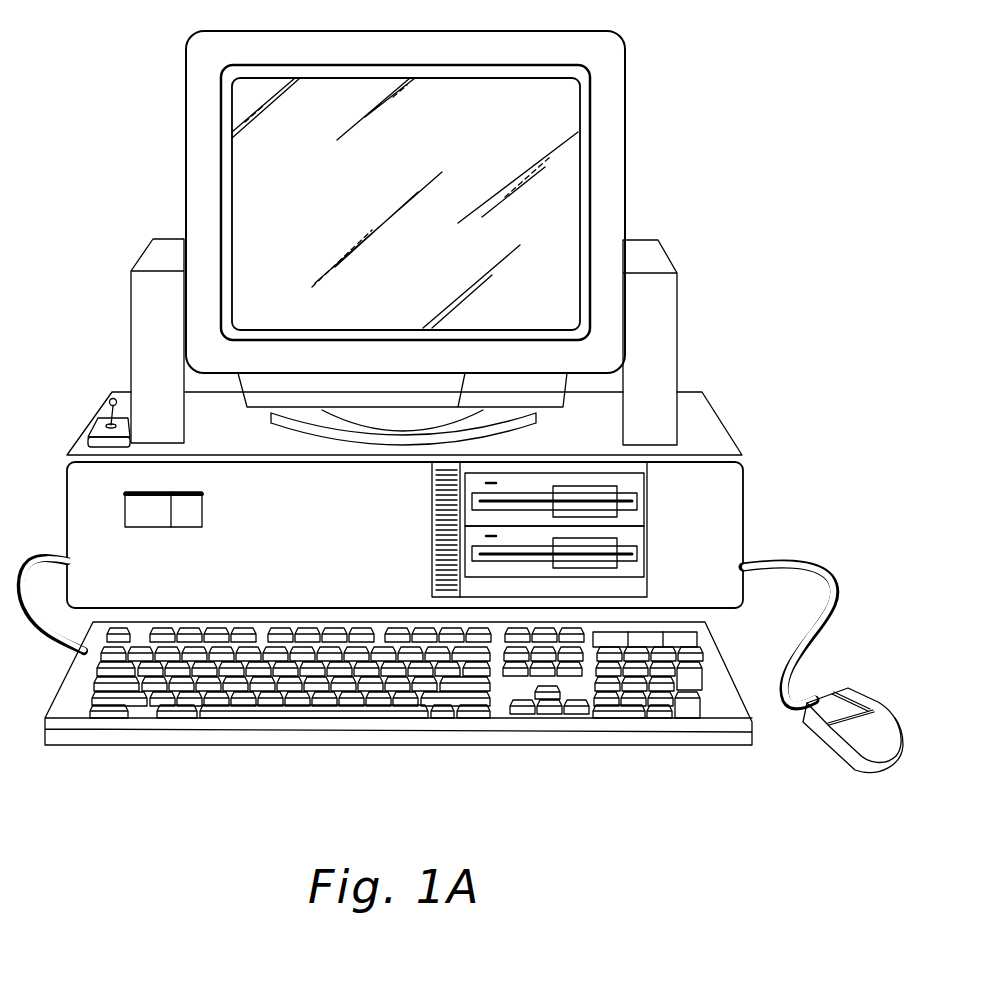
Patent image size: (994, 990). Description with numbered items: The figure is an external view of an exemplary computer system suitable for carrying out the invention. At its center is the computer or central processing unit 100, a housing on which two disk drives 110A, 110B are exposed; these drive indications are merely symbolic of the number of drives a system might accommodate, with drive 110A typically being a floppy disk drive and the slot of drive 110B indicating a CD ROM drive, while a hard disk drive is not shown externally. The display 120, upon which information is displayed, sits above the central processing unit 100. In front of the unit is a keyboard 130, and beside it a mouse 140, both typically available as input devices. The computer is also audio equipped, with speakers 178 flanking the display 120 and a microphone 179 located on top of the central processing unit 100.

The central processing unit 100 is at (450, 500).
The disk drive 110A is at (632, 512).
The disk drive 110B is at (632, 565).
The display 120 is at (625, 154).
The keyboard 130 is at (184, 747).
The mouse 140 is at (833, 750).
The speakers 178 is at (140, 254).
The microphone 179 is at (109, 397).